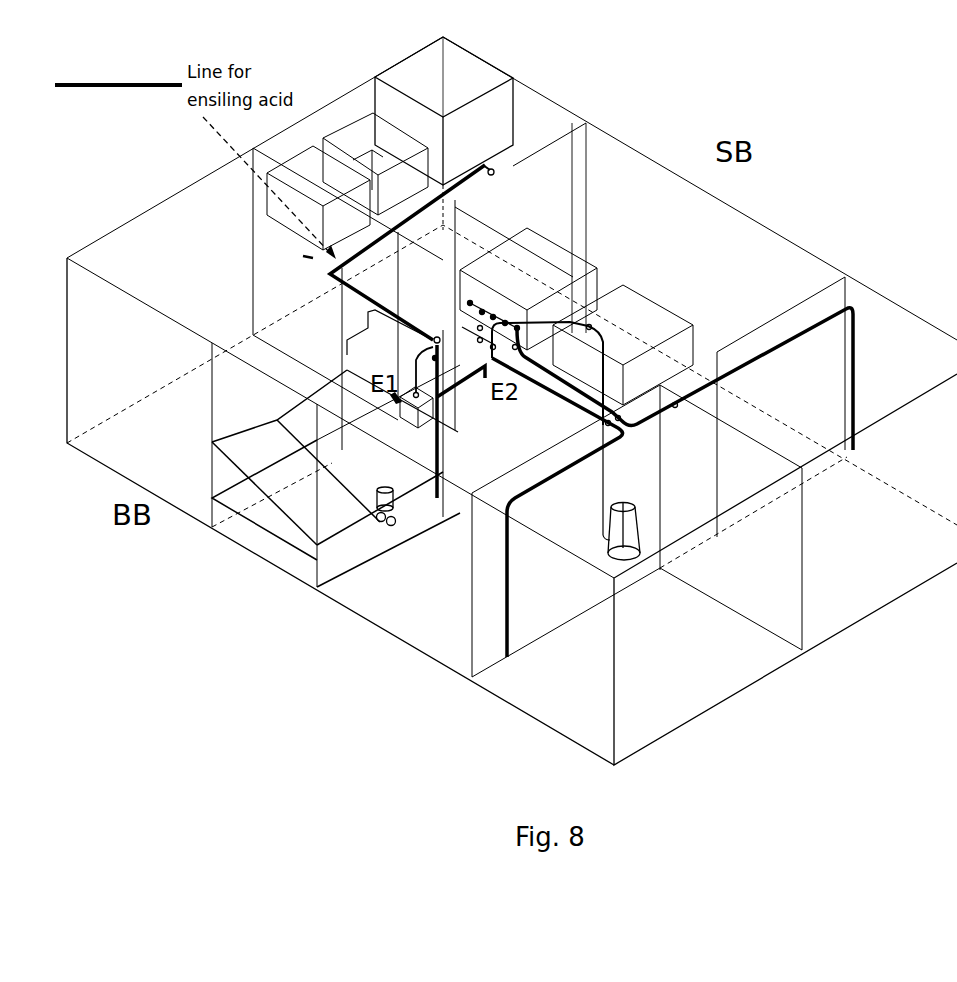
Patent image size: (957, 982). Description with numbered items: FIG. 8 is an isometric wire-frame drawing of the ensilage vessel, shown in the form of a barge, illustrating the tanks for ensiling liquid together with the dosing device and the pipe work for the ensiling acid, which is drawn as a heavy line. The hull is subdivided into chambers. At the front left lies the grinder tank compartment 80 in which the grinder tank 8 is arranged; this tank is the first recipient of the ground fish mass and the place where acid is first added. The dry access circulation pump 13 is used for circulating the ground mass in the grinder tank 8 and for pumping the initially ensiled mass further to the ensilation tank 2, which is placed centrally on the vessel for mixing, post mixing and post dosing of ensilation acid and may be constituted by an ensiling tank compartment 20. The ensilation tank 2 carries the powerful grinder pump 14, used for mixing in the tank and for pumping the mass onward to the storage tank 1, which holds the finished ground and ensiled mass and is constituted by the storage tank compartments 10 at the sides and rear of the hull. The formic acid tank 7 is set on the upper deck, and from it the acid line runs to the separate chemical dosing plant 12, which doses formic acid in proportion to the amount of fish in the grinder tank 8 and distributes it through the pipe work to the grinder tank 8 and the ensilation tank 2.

The storage tank 1 is at (512, 401).
The storage tank compartment 10 is at (529, 400).
The formic acid tank 7 is at (444, 111).
The grinder tank compartment 80 is at (336, 448).
The grinder tank 8 is at (336, 448).
The chemical dosing plant 12 is at (412, 331).
The ensiling tank compartment 20 is at (657, 479).
The ensilation tank 2 is at (657, 479).
The circulation pump 13 is at (368, 506).
The grinder pump 14 is at (603, 532).